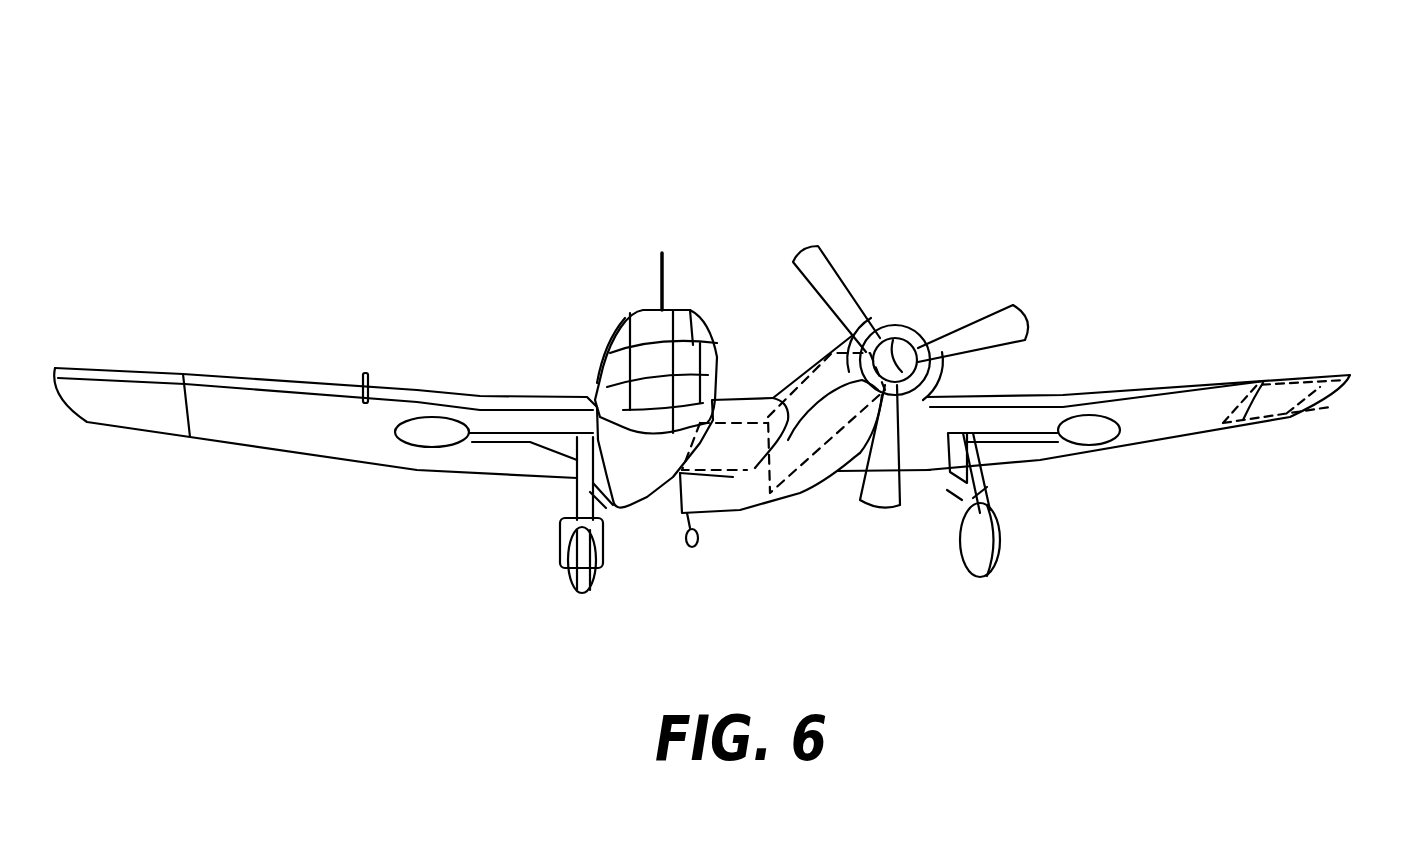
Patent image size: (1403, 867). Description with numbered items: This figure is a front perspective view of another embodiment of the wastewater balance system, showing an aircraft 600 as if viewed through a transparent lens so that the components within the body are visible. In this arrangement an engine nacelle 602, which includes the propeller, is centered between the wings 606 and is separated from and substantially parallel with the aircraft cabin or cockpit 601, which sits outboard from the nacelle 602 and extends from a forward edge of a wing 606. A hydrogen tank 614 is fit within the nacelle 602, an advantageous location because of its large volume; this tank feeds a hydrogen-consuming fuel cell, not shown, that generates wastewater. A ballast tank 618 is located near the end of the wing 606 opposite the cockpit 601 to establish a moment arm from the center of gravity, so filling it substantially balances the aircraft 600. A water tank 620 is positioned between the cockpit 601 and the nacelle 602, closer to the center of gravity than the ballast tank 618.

The aircraft 600 is at (848, 143).
The aircraft cabin or cockpit 601 is at (627, 440).
The engine nacelle 602 is at (857, 533).
The wings 606 is at (442, 362).
The hydrogen tank 614 is at (845, 372).
The ballast tank 618 is at (1293, 393).
The water tank 620 is at (730, 437).